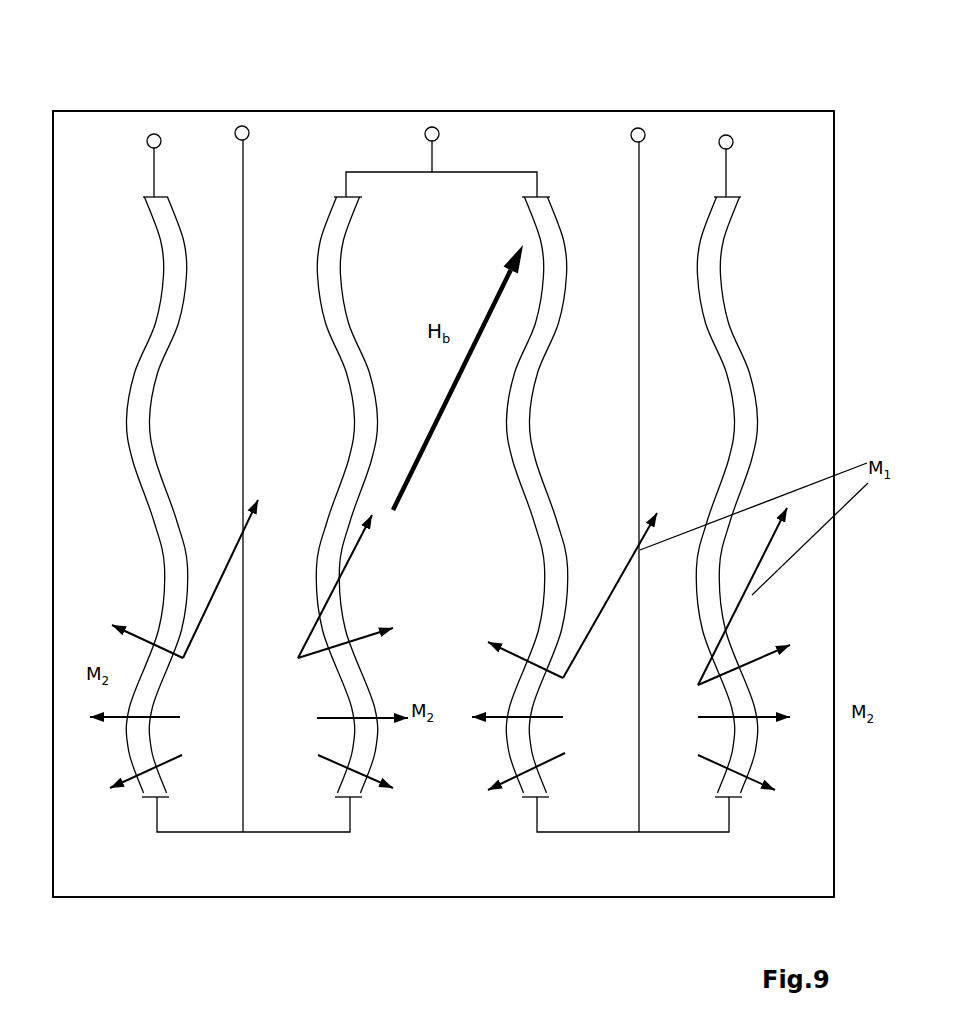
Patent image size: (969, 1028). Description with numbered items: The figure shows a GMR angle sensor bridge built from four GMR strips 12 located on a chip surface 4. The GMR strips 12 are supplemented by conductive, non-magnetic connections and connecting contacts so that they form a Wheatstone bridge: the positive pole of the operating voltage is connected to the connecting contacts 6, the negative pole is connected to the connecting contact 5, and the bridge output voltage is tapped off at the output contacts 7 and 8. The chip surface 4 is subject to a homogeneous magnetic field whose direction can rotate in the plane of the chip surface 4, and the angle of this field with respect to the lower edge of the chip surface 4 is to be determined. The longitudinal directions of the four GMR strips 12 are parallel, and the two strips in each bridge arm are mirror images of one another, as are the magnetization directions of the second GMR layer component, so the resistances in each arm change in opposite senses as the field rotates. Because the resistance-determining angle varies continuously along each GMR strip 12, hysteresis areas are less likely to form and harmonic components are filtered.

The chip surface 4 is at (812, 383).
The connecting contact 5 is at (436, 130).
The connecting contacts 6 is at (159, 137).
The output contact 7 is at (246, 128).
The output contact 8 is at (641, 130).
The GMR strips 12 is at (545, 325).